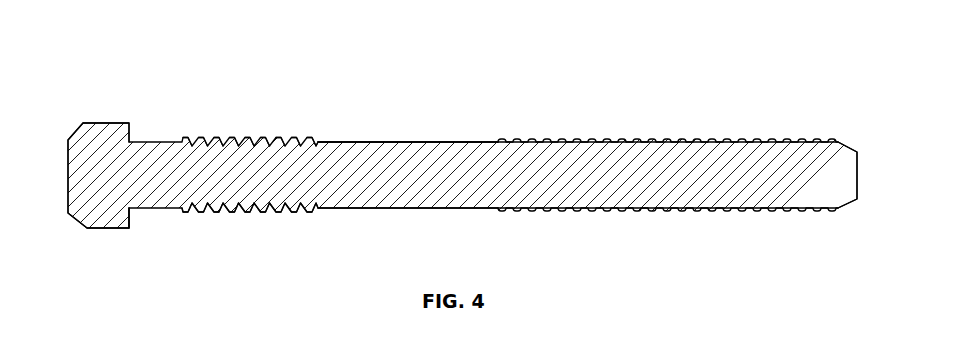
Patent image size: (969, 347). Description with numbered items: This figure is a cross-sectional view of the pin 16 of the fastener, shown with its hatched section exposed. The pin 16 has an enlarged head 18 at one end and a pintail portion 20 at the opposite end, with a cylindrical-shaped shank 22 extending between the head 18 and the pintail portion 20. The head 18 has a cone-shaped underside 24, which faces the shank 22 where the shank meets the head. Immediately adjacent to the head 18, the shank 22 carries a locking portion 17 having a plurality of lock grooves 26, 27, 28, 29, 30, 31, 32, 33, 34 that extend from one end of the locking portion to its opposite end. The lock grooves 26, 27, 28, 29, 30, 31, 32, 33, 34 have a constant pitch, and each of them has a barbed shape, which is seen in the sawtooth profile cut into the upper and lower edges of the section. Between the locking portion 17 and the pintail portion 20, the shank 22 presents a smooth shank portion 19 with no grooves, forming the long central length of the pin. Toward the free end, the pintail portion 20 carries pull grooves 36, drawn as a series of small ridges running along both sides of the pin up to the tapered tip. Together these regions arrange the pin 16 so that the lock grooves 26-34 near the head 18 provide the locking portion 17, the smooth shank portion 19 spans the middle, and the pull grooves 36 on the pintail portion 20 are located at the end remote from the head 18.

The pin 16 is at (107, 38).
The locking portion 17 is at (241, 209).
The head 18 is at (106, 111).
The smooth shank portion 19 is at (394, 193).
The pintail portion 20 is at (833, 140).
The shank 22 is at (385, 141).
The cone-shaped underside 24 is at (134, 214).
The lock groove 26 is at (311, 137).
The lock groove 27 is at (294, 137).
The lock groove 28 is at (279, 137).
The lock groove 29 is at (264, 137).
The lock groove 30 is at (251, 137).
The lock groove 31 is at (234, 137).
The lock groove 32 is at (220, 137).
The lock groove 33 is at (203, 137).
The lock groove 34 is at (186, 137).
The pull grooves 36 is at (676, 140).